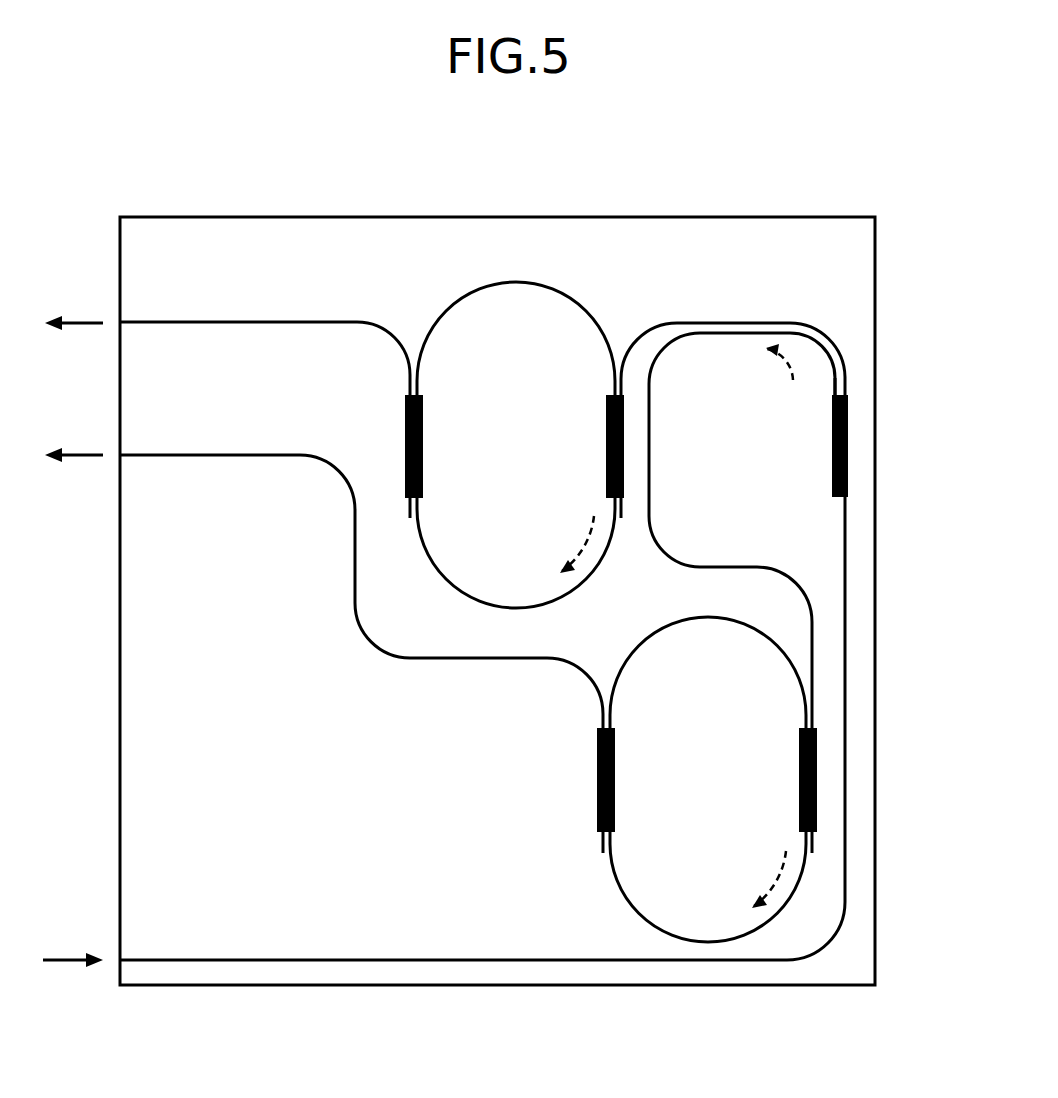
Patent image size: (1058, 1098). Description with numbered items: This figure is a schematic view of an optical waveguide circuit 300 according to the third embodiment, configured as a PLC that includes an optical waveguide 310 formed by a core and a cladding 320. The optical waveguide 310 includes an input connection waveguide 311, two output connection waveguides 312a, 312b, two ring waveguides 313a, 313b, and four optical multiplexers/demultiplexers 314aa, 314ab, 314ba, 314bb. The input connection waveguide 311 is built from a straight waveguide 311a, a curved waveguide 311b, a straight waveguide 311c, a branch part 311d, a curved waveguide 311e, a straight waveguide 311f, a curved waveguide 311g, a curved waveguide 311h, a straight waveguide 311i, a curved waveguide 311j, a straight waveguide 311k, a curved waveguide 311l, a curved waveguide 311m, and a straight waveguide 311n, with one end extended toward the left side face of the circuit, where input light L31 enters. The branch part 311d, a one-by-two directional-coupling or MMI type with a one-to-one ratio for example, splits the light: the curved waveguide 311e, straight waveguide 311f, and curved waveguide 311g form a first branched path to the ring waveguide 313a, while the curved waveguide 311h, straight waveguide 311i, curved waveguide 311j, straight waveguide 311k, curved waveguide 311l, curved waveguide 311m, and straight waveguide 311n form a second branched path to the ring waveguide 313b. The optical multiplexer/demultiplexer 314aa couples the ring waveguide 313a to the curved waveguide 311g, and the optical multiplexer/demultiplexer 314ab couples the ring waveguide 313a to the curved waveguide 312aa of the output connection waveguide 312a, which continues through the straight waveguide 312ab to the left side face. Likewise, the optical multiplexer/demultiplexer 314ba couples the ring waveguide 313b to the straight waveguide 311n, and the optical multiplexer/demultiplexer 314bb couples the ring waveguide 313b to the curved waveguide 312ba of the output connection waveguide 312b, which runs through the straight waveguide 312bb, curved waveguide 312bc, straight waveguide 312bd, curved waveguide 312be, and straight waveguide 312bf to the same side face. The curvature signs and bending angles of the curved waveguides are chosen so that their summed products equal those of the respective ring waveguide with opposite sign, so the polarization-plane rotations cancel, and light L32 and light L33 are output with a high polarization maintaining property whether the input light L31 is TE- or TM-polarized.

The optical waveguide circuit 300 is at (850, 186).
The optical waveguide 310 is at (699, 250).
The cladding 320 is at (855, 950).
The input connection waveguide 311 is at (688, 975).
The straight waveguide 311a is at (358, 958).
The curved waveguide 311b is at (825, 948).
The straight waveguide 311c is at (846, 630).
The branch part 311d is at (846, 440).
The curved waveguide 311e is at (825, 325).
The straight waveguide 311f is at (729, 322).
The curved waveguide 311g is at (628, 345).
The curved waveguide 311h is at (817, 357).
The straight waveguide 311i is at (735, 338).
The curved waveguide 311j is at (667, 350).
The straight waveguide 311k is at (651, 458).
The curved waveguide 311l is at (676, 560).
The curved waveguide 311m is at (784, 573).
The straight waveguide 311n is at (815, 674).
The output connection waveguide 312a is at (298, 285).
The curved waveguide 312aa is at (397, 337).
The straight waveguide 312ab is at (199, 321).
The output connection waveguide 312b is at (352, 665).
The curved waveguide 312ba is at (569, 682).
The straight waveguide 312bb is at (481, 660).
The curved waveguide 312bc is at (372, 634).
The straight waveguide 312bd is at (354, 559).
The curved waveguide 312be is at (336, 464).
The straight waveguide 312bf is at (199, 454).
The ring waveguide 313a is at (588, 252).
The ring waveguide 313b is at (598, 907).
The optical multiplexer/demultiplexer 314aa is at (607, 436).
The optical multiplexer/demultiplexer 314ab is at (424, 470).
The optical multiplexer/demultiplexer 314ba is at (800, 762).
The optical multiplexer/demultiplexer 314bb is at (618, 800).
The input light L31 is at (64, 958).
The light L32 is at (79, 321).
The light L33 is at (79, 453).